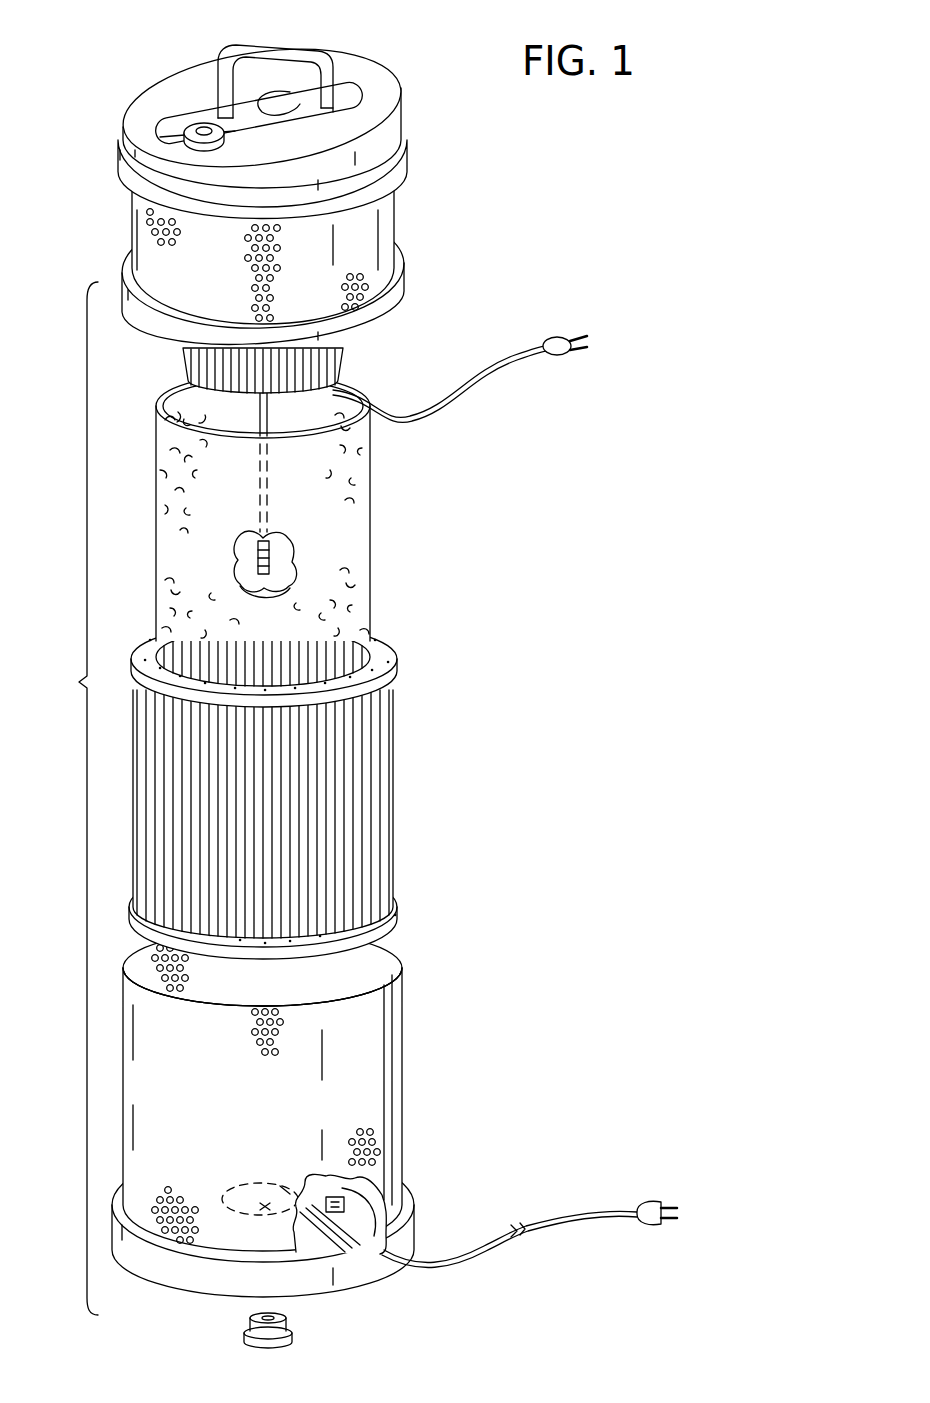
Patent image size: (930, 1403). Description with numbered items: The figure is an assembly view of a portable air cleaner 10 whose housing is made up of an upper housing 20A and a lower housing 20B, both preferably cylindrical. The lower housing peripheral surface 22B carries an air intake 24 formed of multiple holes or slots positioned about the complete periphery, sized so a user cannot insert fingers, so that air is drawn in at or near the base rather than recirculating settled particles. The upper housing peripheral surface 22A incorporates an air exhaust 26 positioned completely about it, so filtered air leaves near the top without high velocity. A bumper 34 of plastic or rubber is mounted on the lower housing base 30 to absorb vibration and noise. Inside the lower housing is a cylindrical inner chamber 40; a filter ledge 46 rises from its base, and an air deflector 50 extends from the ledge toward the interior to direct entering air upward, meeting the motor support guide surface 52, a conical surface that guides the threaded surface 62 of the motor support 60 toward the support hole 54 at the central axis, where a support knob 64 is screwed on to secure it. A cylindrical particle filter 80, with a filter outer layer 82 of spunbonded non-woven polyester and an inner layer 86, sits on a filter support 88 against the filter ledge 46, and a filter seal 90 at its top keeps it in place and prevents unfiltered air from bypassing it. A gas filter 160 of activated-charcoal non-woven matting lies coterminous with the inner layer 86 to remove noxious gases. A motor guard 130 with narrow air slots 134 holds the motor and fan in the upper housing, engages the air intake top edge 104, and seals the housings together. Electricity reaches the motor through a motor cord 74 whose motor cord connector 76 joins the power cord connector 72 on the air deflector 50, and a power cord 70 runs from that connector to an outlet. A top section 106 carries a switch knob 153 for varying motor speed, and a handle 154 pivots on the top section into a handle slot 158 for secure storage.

The portable air cleaner 10 is at (618, 550).
The upper housing 20A is at (409, 214).
The lower housing 20B is at (414, 1066).
The upper housing peripheral surface 22A is at (396, 242).
The lower housing peripheral surface 22B is at (403, 1027).
The air intake 24 is at (378, 1142).
The air exhaust 26 is at (165, 236).
The lower housing base 30 is at (333, 1228).
The bumper 34 is at (342, 1282).
The inner chamber 40 is at (358, 972).
The filter ledge 46 is at (387, 1233).
The air deflector 50 is at (310, 1243).
The motor support guide surface 52 is at (287, 1190).
The support hole 54 is at (265, 1205).
The motor support 60 is at (272, 419).
The threaded surface 62 is at (272, 563).
The support knob 64 is at (245, 1333).
The power cord 70 is at (472, 1265).
The power cord connector 72 is at (345, 1205).
The motor cord 74 is at (484, 378).
The motor cord connector 76 is at (570, 354).
The particle filter 80 is at (400, 742).
The filter outer layer 82 is at (395, 793).
The inner layer 86 is at (348, 663).
The filter support 88 is at (395, 913).
The filter seal 90 is at (383, 648).
The air intake top edge 104 is at (392, 1010).
The top section 106 is at (384, 82).
The motor guard 130 is at (346, 358).
The air slots 134 is at (192, 358).
The switch knob 153 is at (200, 127).
The handle 154 is at (276, 52).
The handle slot 158 is at (339, 88).
The gas filter 160 is at (362, 588).